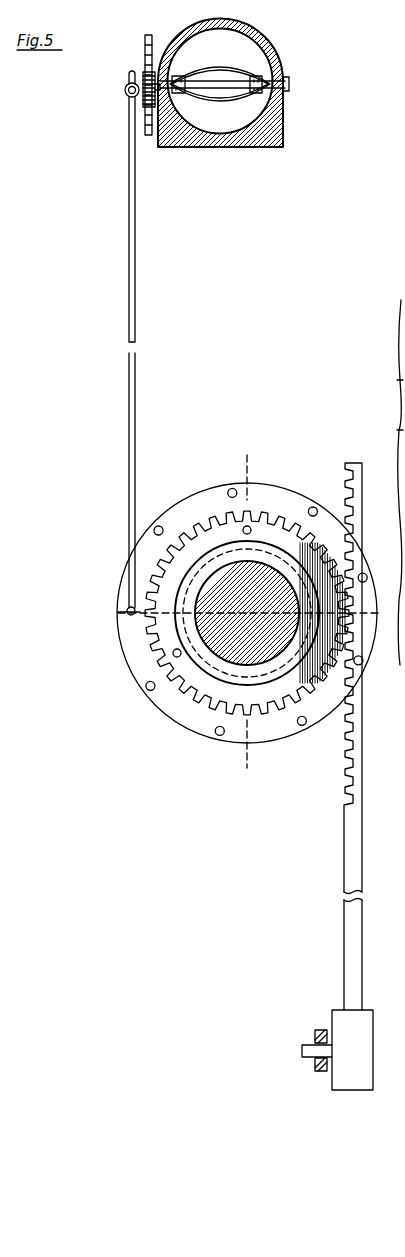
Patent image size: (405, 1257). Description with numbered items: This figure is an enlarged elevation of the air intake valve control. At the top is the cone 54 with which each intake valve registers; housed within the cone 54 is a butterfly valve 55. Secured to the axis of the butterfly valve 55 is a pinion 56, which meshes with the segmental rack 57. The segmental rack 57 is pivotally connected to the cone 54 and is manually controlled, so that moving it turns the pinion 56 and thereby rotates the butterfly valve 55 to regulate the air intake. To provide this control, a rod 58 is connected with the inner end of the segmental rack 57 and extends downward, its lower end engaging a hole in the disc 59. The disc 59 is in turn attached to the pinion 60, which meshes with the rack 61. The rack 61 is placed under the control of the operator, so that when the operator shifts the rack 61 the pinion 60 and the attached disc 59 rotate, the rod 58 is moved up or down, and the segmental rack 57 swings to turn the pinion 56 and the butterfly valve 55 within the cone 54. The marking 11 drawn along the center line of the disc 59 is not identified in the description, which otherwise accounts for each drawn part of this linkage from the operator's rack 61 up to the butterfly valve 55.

The shaft axis 11 is at (248, 615).
The cone 54 is at (281, 115).
The butterfly valve 55 is at (218, 78).
The pinion 56 is at (143, 80).
The segmental rack 57 is at (152, 45).
The rod 58 is at (136, 232).
The disc 59 is at (200, 495).
The pinion 60 is at (265, 692).
The rack 61 is at (356, 462).